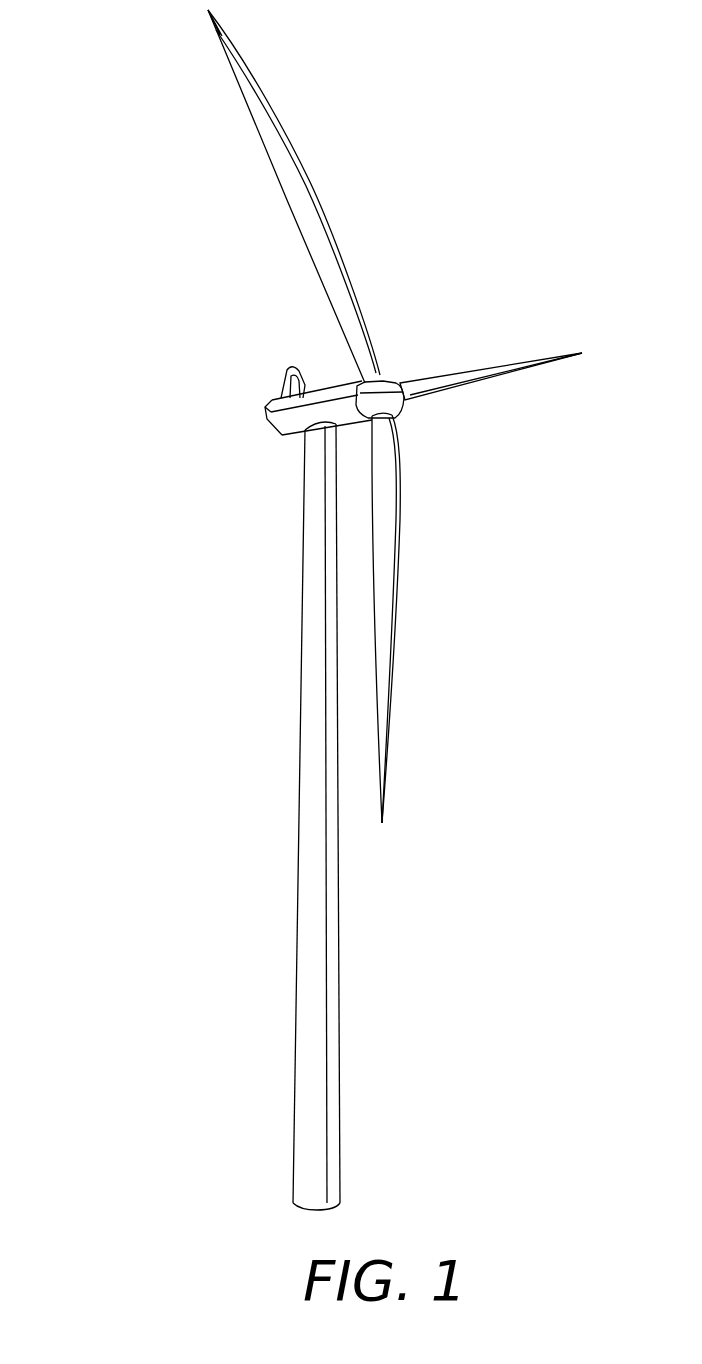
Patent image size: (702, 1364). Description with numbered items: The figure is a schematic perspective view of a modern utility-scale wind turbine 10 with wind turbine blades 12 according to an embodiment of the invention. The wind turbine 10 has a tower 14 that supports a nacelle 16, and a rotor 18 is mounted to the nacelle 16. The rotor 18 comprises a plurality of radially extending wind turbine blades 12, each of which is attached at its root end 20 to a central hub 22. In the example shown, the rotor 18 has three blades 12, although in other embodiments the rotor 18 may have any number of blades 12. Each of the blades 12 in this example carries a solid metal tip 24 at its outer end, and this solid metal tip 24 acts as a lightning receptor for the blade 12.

The wind turbine 10 is at (112, 193).
The wind turbine blade 12 is at (327, 193).
The tower 14 is at (305, 715).
The nacelle 16 is at (270, 402).
The rotor 18 is at (473, 240).
The root end 20 is at (380, 372).
The central hub 22 is at (409, 413).
The solid metal tip 24 is at (215, 28).